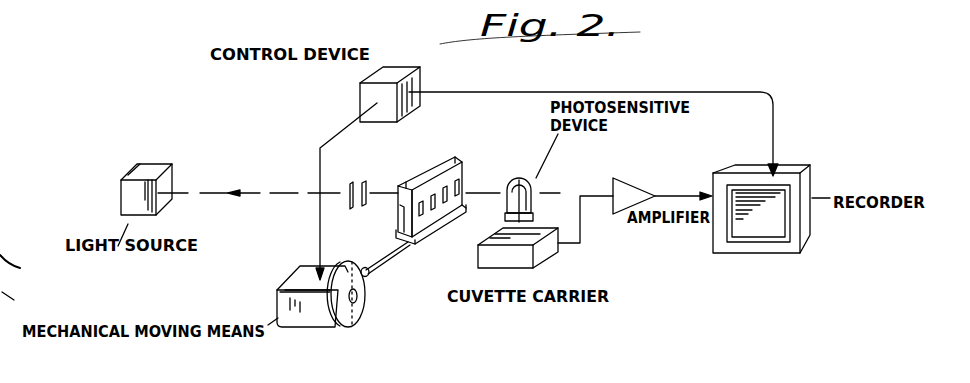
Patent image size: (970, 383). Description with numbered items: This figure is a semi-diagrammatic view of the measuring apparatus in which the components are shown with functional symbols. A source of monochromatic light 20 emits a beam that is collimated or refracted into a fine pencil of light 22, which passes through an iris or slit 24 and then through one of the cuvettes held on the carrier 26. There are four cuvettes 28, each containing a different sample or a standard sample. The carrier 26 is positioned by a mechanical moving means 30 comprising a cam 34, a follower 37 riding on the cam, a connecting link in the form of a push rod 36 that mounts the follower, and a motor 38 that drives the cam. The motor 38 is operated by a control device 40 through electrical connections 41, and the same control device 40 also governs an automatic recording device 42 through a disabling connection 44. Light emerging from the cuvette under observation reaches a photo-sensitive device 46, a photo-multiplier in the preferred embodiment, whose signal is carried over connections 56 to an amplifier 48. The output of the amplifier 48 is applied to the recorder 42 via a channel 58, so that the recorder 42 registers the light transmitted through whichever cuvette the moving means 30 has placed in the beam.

The source of monochromatic light 20 is at (150, 170).
The pencil of light 22 is at (384, 192).
The iris or slit 24 is at (351, 183).
The carrier 26 is at (455, 225).
The cuvettes 28 is at (432, 165).
The mechanical moving means 30 is at (313, 310).
The cam 34 is at (348, 328).
The push rod 36 is at (380, 250).
The follower 37 is at (370, 274).
The motor 38 is at (288, 305).
The control device 40 is at (378, 80).
The electrical connections 41 is at (320, 158).
The automatic recording device 42 is at (810, 185).
The disabling connection 44 is at (668, 92).
The photo-sensitive device 46 is at (536, 200).
The amplifier 48 is at (636, 178).
The connections 56 is at (590, 244).
The channel 58 is at (672, 190).